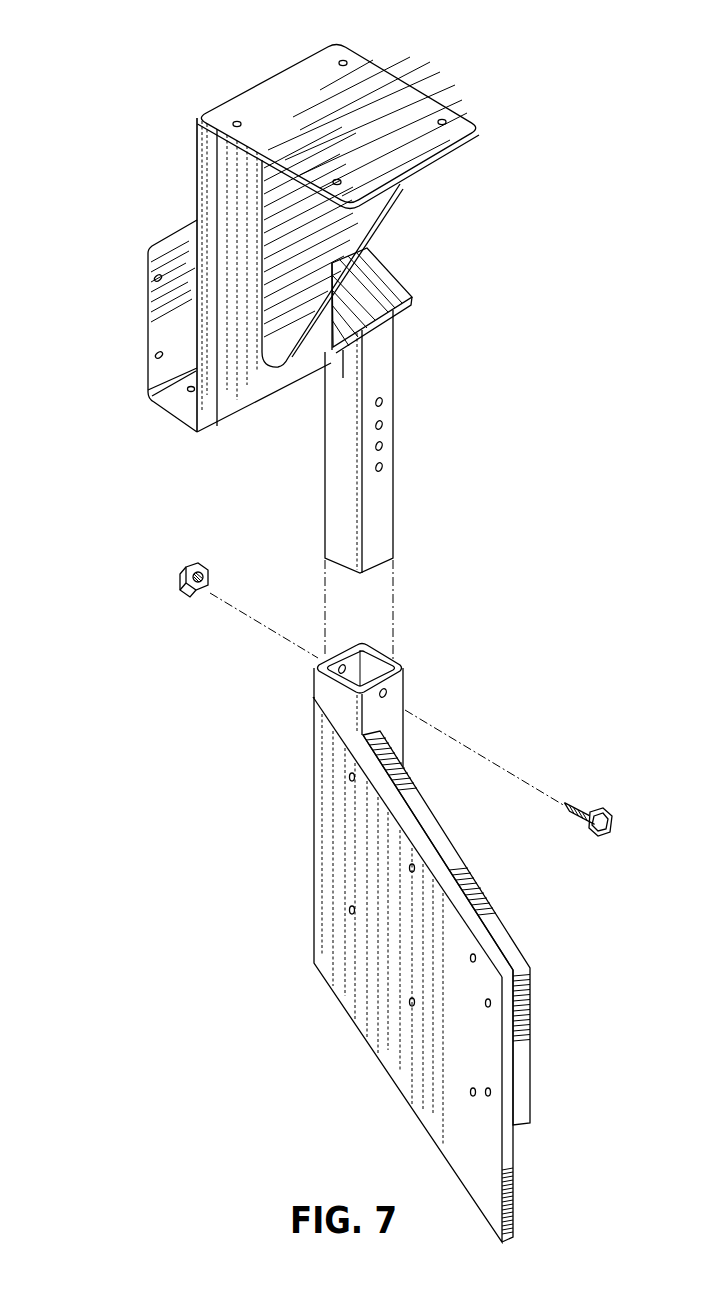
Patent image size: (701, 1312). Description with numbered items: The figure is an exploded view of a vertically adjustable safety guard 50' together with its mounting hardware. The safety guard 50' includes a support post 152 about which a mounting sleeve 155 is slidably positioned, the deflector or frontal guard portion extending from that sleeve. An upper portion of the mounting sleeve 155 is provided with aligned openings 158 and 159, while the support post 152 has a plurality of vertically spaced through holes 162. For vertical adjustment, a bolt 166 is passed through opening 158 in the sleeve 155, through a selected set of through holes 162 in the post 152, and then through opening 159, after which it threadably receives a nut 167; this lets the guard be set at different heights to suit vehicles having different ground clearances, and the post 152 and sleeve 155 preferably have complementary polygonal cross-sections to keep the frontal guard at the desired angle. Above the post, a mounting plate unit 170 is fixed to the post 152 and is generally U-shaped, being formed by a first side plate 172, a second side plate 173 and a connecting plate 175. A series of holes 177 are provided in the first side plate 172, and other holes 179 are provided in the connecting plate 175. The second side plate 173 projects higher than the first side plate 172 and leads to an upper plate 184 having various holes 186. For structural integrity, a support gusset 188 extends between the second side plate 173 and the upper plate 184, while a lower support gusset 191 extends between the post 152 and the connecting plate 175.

The mounting plate unit 170 is at (259, 253).
The upper plate 184 is at (302, 95).
The holes 186 is at (443, 120).
The second side plate 173 is at (220, 172).
The first side plate 172 is at (175, 252).
The holes 177 is at (150, 280).
The connecting plate 175 is at (168, 400).
The holes 179 is at (190, 393).
The support gusset 188 is at (330, 243).
The lower support gusset 191 is at (322, 356).
The support post 152 is at (380, 378).
The through holes 162 is at (385, 448).
The nut 167 is at (180, 582).
The bolt 166 is at (602, 808).
The safety guard 50' is at (362, 941).
The mounting sleeve 155 is at (388, 720).
The opening 158 is at (388, 690).
The opening 159 is at (318, 668).